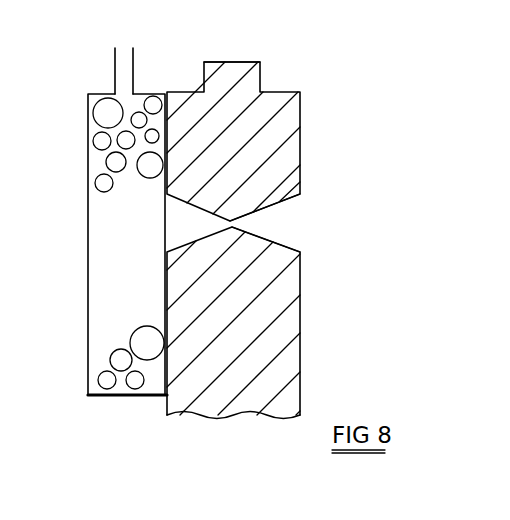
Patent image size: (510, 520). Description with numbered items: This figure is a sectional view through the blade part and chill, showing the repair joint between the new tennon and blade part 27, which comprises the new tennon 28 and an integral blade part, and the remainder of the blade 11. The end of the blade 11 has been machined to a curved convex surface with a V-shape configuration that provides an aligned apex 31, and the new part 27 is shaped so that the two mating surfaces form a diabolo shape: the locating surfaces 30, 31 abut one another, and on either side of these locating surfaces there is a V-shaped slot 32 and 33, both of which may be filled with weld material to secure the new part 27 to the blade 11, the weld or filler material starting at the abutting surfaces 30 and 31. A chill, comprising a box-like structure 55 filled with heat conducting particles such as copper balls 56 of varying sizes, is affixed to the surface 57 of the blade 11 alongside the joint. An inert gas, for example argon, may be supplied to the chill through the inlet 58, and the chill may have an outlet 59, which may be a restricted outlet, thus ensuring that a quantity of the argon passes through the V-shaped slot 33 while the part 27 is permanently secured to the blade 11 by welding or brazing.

The blade 11 is at (292, 280).
The new tennon and blade part 27 is at (308, 105).
The new tennon 28 is at (234, 62).
The locating surface 30 is at (231, 221).
The apex 31 is at (233, 223).
The V-shaped slot 32 is at (323, 219).
The V-shaped slot 33 is at (193, 227).
The box-like structure 55 is at (102, 94).
The copper balls 56 is at (95, 177).
The surface 57 is at (165, 398).
The inlet 58 is at (117, 360).
The outlet 59 is at (120, 52).